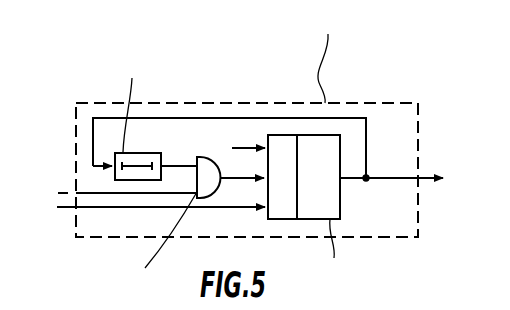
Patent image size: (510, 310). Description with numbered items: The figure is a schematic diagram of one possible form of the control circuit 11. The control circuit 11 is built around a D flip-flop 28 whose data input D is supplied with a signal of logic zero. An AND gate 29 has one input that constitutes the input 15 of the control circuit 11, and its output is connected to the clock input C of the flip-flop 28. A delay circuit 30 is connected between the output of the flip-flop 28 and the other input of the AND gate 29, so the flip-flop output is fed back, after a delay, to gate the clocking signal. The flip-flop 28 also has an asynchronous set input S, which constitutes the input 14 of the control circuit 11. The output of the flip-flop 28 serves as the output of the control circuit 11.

The control circuit 11 is at (358, 101).
The input 14 is at (62, 212).
The input 15 is at (70, 183).
The D flip-flop 28 is at (328, 165).
The AND gate 29 is at (213, 187).
The delay circuit 30 is at (140, 152).